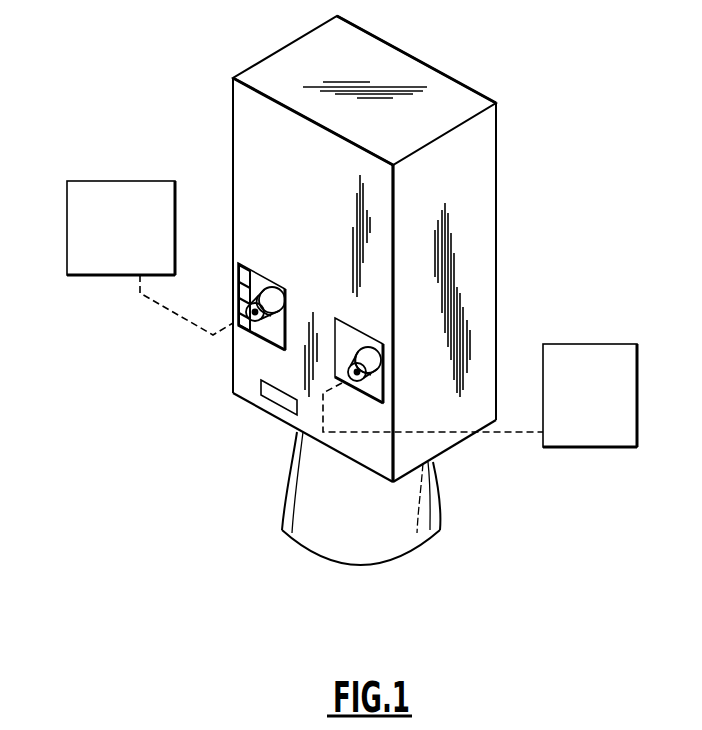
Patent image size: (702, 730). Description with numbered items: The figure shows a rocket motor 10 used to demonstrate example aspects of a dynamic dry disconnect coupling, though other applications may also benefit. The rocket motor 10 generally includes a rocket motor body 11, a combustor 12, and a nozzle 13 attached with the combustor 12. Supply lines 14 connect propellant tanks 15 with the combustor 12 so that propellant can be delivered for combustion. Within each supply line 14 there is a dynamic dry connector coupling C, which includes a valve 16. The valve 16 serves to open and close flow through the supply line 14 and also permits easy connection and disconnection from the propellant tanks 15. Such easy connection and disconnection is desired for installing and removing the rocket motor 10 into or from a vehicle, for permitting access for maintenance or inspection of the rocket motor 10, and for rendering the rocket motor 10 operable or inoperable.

The rocket motor 10 is at (125, 456).
The rocket motor body 11 is at (463, 245).
The combustor 12 is at (275, 403).
The nozzle 13 is at (298, 515).
The supply lines 14 is at (188, 323).
The propellant tanks 15 is at (67, 238).
The valve 16 is at (280, 293).
The dynamic dry connector coupling C is at (385, 360).